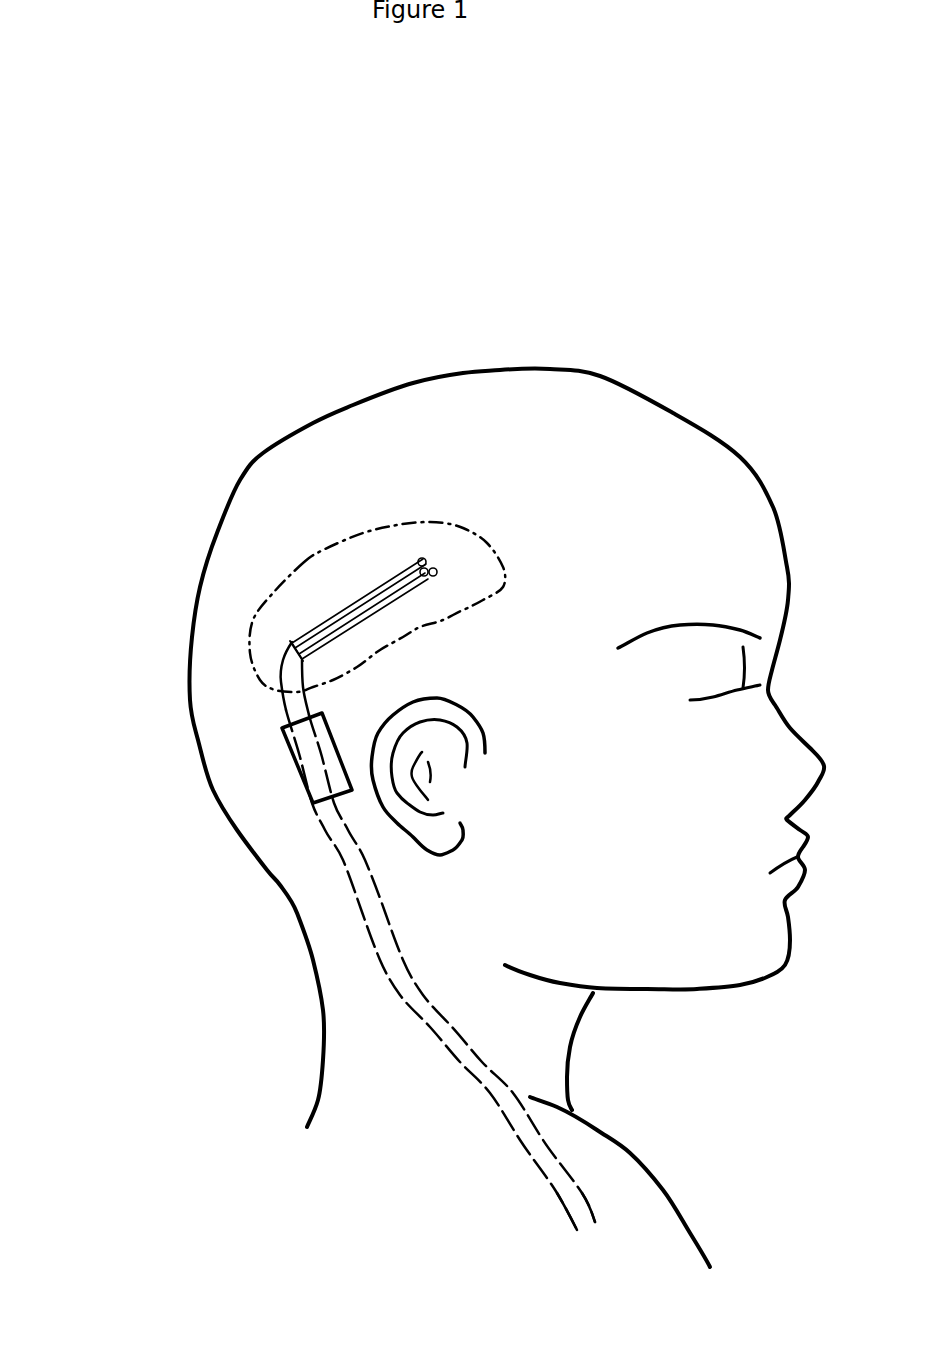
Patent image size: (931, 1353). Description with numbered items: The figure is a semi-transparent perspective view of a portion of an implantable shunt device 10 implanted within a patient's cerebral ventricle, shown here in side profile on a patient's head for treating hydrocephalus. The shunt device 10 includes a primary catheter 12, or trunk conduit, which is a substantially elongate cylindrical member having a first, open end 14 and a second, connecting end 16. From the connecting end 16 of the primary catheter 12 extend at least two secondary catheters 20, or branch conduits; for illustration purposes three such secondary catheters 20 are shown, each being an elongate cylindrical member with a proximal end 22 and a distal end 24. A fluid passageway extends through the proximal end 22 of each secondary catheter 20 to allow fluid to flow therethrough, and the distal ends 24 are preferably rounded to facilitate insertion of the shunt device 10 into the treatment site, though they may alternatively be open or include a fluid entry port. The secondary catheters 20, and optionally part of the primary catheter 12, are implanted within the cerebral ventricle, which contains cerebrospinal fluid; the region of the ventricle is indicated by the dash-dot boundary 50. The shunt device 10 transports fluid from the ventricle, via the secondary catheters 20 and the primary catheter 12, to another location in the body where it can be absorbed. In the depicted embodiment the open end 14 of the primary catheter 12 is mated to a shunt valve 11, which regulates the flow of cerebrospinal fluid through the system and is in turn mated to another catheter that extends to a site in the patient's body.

The shunt device 10 is at (289, 501).
The shunt valve 11 is at (312, 767).
The primary catheter 12 is at (360, 847).
The open end 14 is at (562, 1220).
The connecting end 16 is at (272, 657).
The secondary catheters 20 is at (353, 587).
The proximal end 22 is at (297, 628).
The distal end 24 is at (433, 552).
The target brain region 50 is at (518, 543).